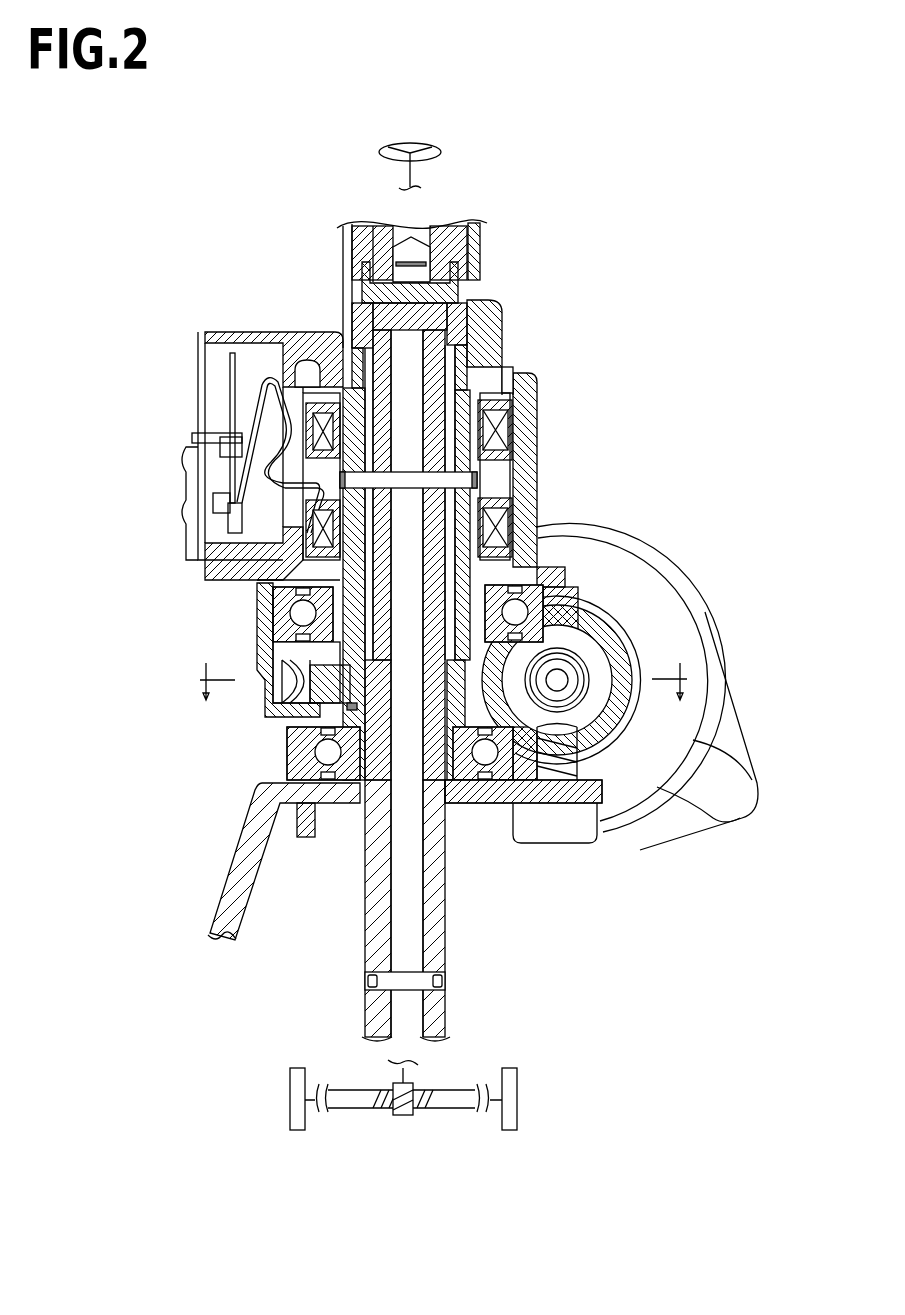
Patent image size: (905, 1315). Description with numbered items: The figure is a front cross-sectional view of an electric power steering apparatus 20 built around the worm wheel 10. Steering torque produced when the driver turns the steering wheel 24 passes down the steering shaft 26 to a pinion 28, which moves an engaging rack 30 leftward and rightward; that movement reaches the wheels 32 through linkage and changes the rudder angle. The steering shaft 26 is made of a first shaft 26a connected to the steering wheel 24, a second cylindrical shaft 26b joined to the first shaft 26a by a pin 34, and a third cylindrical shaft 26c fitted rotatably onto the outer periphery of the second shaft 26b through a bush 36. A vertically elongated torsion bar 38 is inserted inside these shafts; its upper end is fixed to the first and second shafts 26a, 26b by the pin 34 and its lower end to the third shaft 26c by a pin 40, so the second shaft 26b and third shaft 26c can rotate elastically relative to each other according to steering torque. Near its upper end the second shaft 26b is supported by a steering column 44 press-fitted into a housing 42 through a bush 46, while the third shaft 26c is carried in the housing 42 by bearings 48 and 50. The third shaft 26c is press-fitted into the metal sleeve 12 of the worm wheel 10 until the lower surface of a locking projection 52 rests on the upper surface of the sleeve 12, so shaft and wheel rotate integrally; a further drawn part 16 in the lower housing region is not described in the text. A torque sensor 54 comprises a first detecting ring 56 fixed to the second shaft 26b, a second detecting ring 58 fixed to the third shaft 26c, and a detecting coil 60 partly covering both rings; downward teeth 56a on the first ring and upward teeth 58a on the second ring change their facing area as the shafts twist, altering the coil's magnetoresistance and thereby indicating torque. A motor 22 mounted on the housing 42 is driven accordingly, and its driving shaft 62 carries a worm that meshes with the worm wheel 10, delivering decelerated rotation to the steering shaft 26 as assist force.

The worm wheel 10 is at (472, 707).
The metal sleeve 12 is at (285, 750).
The housing 16 is at (285, 718).
The electric power steering apparatus 20 is at (634, 153).
The motor 22 is at (680, 643).
The steering wheel 24 is at (421, 141).
The steering shaft 26 is at (433, 217).
The first shaft 26a is at (437, 253).
The second shaft 26b is at (455, 334).
The third shaft 26c is at (262, 583).
The pinion 28 is at (405, 1117).
The rack 30 is at (352, 1100).
The wheels 32 is at (508, 1117).
The pin 34 is at (450, 295).
The bush 36 is at (340, 637).
The torsion bar 38 is at (430, 468).
The pin 40 is at (425, 981).
The housing 42 is at (530, 418).
The steering column 44 is at (346, 250).
The bush 46 is at (360, 360).
The bearing 48 is at (302, 613).
The bearing 50 is at (320, 806).
The locking projection 52 is at (340, 658).
The torque sensor 54 is at (493, 388).
The first detecting ring 56 is at (473, 495).
The teeth 56a is at (473, 520).
The second detecting ring 58 is at (495, 545).
The teeth 58a is at (483, 567).
The detecting coil 60 is at (507, 530).
The driving shaft 62 is at (560, 681).